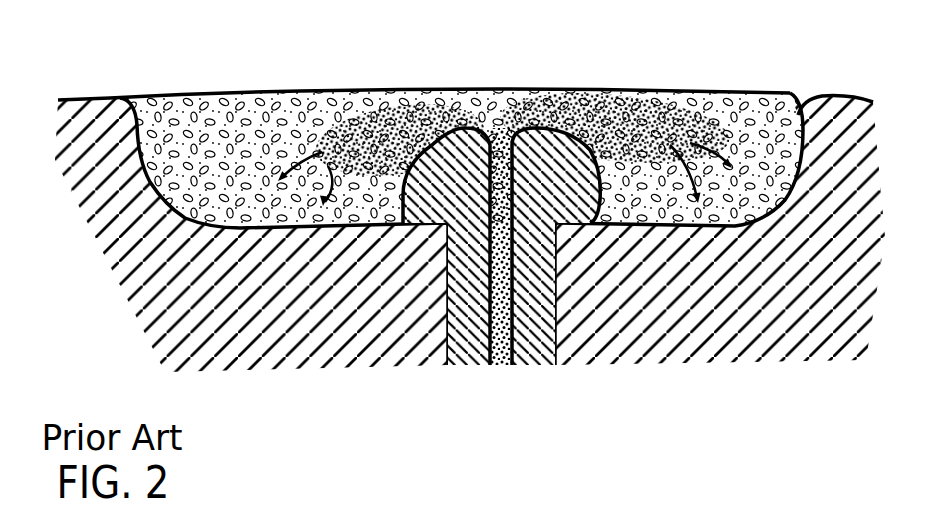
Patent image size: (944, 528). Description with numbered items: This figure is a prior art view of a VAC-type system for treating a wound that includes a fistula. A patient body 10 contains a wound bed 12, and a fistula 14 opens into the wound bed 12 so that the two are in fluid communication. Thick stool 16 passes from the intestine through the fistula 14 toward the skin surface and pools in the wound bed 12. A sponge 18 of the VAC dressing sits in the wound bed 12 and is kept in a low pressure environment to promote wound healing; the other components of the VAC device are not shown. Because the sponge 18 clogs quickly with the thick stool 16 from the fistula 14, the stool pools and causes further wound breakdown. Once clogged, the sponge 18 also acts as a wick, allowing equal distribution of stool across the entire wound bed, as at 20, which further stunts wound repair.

The patient body 10 is at (88, 204).
The wound bed 12 is at (173, 198).
The fistula 14 is at (452, 124).
The stool 16 is at (618, 108).
The sponge 18 is at (315, 85).
The distribution of stool across the wound bed 20 is at (700, 152).